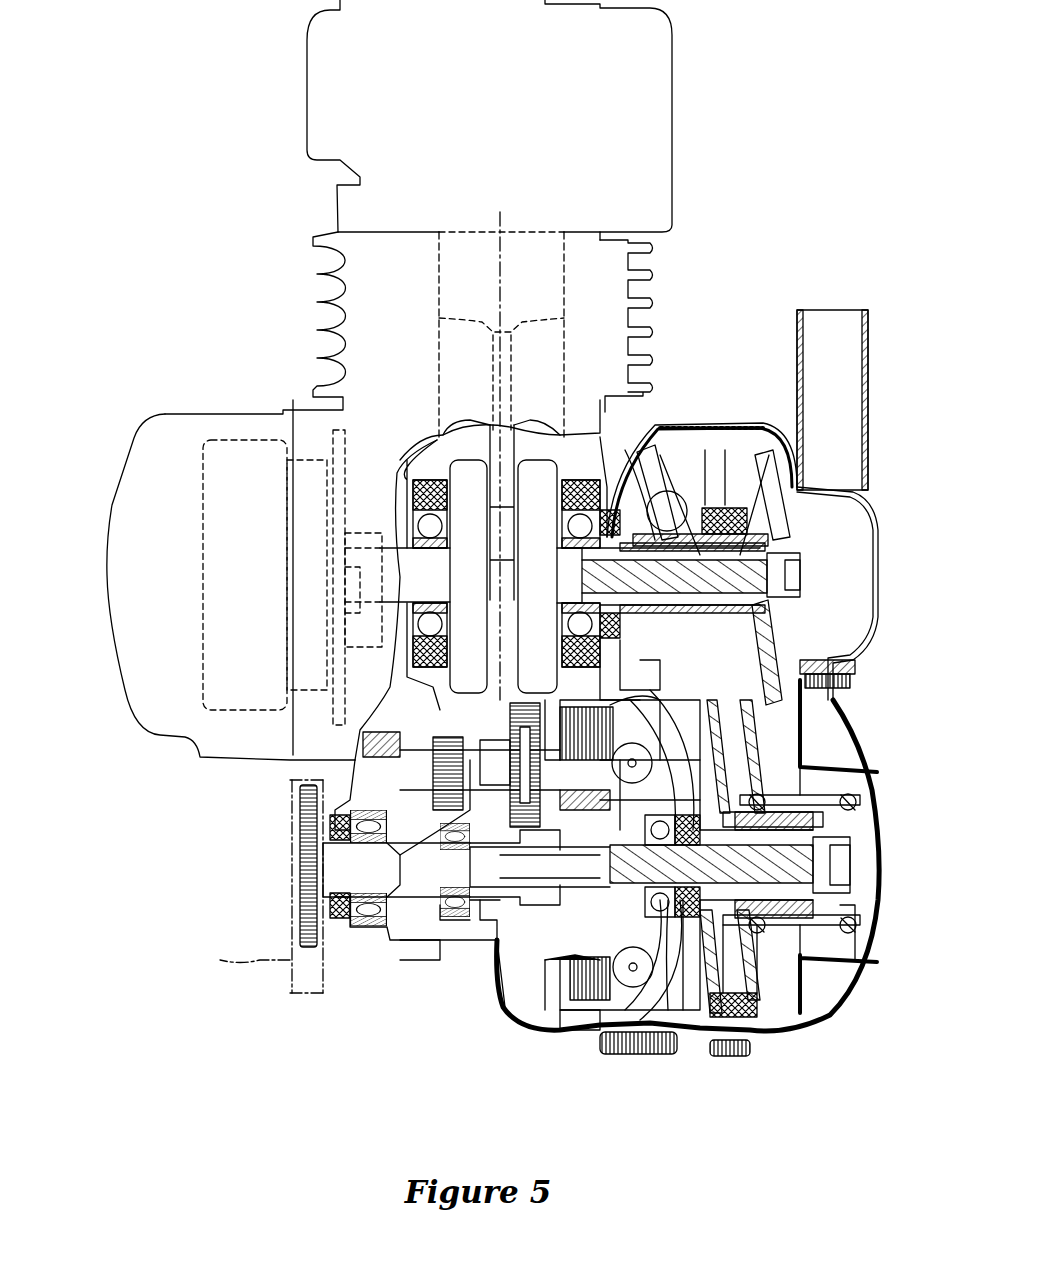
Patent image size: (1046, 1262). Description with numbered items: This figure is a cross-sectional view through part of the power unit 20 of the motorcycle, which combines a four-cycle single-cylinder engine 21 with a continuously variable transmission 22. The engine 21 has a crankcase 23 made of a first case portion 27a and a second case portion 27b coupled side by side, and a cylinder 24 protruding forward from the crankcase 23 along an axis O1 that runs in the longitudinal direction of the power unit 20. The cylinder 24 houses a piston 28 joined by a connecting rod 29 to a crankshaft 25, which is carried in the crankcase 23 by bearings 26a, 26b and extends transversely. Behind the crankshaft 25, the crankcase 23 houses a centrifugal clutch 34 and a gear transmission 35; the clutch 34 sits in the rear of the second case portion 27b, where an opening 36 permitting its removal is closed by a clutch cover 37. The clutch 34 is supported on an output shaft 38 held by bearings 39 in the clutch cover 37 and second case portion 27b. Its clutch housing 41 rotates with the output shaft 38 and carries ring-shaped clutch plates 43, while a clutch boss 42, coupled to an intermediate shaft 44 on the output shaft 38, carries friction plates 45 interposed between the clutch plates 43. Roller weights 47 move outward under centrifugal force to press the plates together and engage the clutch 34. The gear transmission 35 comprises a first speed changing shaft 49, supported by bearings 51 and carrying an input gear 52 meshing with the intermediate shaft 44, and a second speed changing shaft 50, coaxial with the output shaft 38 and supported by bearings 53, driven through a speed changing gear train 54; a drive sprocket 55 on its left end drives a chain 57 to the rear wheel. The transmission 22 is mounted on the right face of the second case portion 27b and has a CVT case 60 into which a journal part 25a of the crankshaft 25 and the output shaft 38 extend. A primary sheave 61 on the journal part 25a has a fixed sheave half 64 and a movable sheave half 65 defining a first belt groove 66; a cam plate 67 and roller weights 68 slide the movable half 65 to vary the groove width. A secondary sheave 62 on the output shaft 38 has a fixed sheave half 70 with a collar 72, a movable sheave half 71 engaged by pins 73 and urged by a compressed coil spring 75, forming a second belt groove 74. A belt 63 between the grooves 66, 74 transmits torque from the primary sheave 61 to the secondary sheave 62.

The power unit 20 is at (735, 150).
The engine 21 is at (322, 230).
The continuously variable transmission 22 is at (860, 740).
The crankcase 23 is at (508, 1075).
The cylinder 24 is at (630, 270).
The crankshaft 25 is at (430, 575).
The journal part 25a is at (755, 577).
The bearing 26a is at (415, 495).
The bearing 26b is at (598, 483).
The first case portion 27a is at (440, 950).
The second case portion 27b is at (497, 990).
The piston 28 is at (455, 250).
The connecting rod 29 is at (478, 422).
The centrifugal clutch 34 is at (568, 1017).
The gear transmission 35 is at (430, 942).
The opening 36 is at (620, 1050).
The clutch cover 37 is at (683, 990).
The output shaft 38 is at (790, 905).
The bearing 39 is at (690, 800).
The clutch housing 41 is at (640, 715).
The clutch boss 42 is at (566, 905).
The clutch plate 43 is at (560, 715).
The intermediate shaft 44 is at (522, 843).
The friction plate 45 is at (560, 962).
The roller weight 47 is at (665, 760).
The first speed changing shaft 49 is at (415, 745).
The second speed changing shaft 50 is at (340, 863).
The bearing 51 is at (522, 722).
The input gear 52 is at (512, 720).
The bearing 53 is at (445, 830).
The speed changing gear train 54 is at (447, 740).
The drive sprocket 55 is at (300, 817).
The chain 57 is at (260, 970).
The CVT case 60 is at (872, 643).
The primary sheave 61 is at (766, 370).
The secondary sheave 62 is at (727, 1103).
The belt 63 is at (745, 535).
The fixed sheave half 64 is at (757, 455).
The movable sheave half 65 is at (662, 470).
The first belt groove 66 is at (735, 490).
The cam plate 67 is at (652, 430).
The roller weight 68 is at (676, 500).
The fixed sheave half 70 is at (735, 1040).
The movable sheave half 71 is at (745, 1005).
The collar 72 is at (768, 817).
The engaging pin 73 is at (790, 810).
The second belt groove 74 is at (735, 970).
The compressed coil spring 75 is at (850, 930).
The axis O1 is at (503, 230).